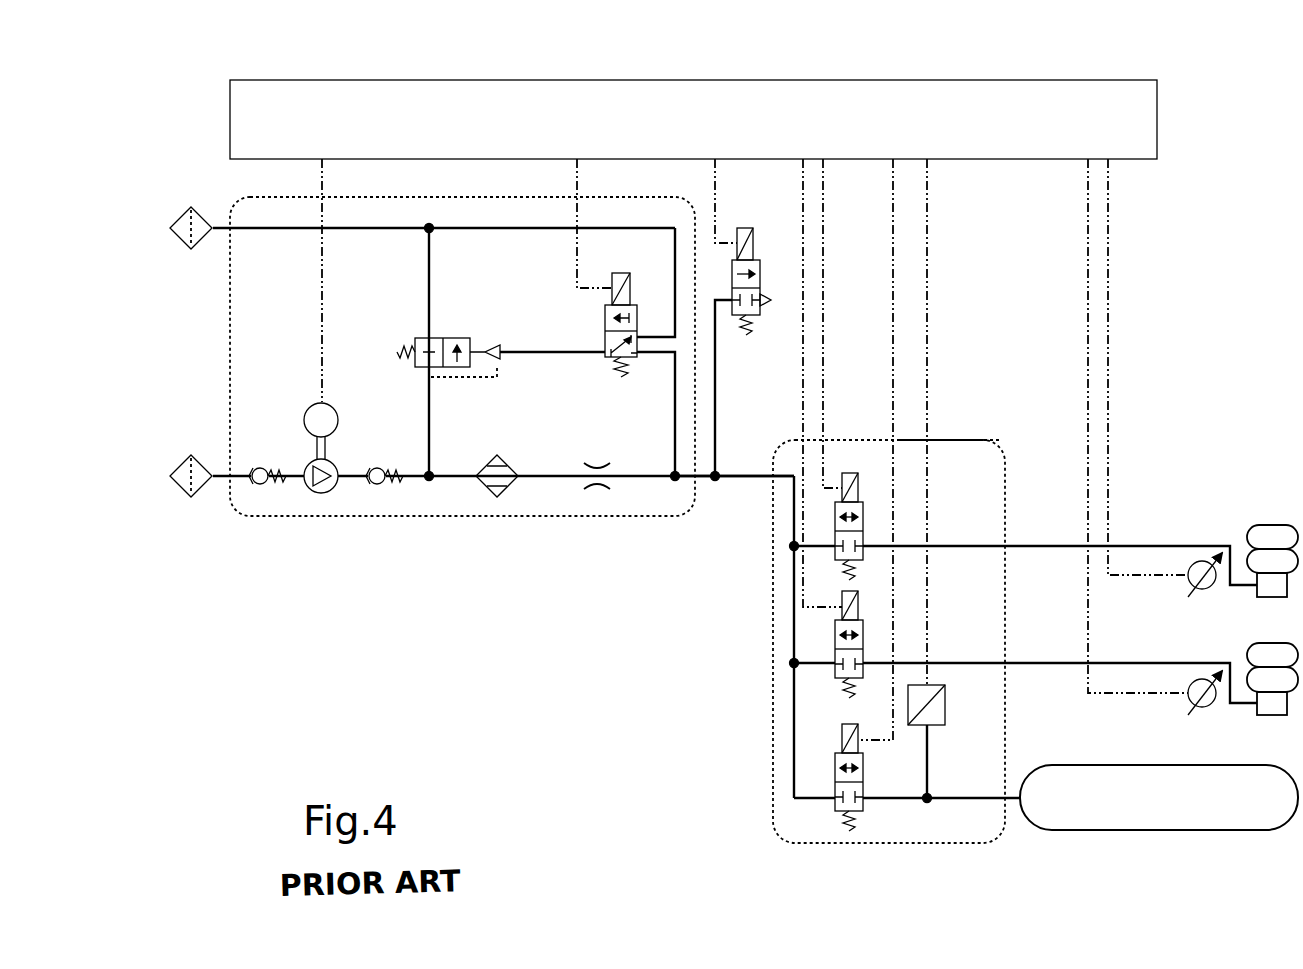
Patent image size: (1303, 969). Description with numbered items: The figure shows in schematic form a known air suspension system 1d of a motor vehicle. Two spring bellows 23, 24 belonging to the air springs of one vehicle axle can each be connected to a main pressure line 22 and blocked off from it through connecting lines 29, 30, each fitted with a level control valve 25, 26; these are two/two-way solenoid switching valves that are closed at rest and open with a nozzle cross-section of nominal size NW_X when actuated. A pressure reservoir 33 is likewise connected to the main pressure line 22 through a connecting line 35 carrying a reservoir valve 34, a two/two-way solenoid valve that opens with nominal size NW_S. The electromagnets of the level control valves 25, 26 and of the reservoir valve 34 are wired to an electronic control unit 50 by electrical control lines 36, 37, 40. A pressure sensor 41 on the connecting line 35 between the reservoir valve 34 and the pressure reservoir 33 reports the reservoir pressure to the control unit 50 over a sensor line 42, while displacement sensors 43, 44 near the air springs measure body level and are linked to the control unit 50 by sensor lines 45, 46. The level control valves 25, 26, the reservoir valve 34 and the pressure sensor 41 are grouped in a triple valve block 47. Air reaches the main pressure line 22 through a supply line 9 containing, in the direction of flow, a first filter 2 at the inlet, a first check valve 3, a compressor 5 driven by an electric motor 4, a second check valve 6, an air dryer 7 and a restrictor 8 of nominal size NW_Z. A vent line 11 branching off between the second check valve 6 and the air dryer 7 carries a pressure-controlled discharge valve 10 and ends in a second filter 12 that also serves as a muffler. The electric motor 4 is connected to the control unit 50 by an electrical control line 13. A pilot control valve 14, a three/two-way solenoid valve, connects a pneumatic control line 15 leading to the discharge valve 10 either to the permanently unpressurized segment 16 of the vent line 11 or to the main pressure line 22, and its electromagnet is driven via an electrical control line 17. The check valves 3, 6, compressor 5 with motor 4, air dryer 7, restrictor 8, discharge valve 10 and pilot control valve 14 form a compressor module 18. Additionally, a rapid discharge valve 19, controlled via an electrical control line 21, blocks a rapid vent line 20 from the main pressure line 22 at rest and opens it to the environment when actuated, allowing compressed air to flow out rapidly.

The air suspension system 1d is at (296, 692).
The first filter 2 is at (205, 490).
The first check valve 3 is at (270, 495).
The electric motor 4 is at (303, 420).
The compressor 5 is at (323, 496).
The second check valve 6 is at (385, 495).
The air dryer 7 is at (512, 490).
The restrictor 8 is at (597, 495).
The supply line 9 is at (465, 480).
The discharge valve 10 is at (410, 325).
The vent line 11 is at (429, 418).
The second filter 12 is at (196, 250).
The electrical control line 13 is at (320, 177).
The pilot control valve 14 is at (593, 325).
The pneumatic control line 15 is at (552, 354).
The permanently unpressurized segment 16 is at (277, 230).
The electrical control line 17 is at (576, 178).
The compressor module 18 is at (430, 520).
The rapid discharge valve 19 is at (747, 345).
The rapid vent line 20 is at (727, 448).
The electrical control line 21 is at (714, 178).
The main pressure line 22 is at (700, 480).
The spring bellows 23 is at (1272, 540).
The spring bellows 24 is at (1272, 655).
The level control valve 25 is at (848, 458).
The level control valve 26 is at (813, 651).
The connecting line 29 is at (1047, 476).
The connecting line 30 is at (1043, 660).
The pressure reservoir 33 is at (1143, 816).
The reservoir valve 34 is at (813, 783).
The connecting line 35 is at (963, 798).
The electrical control line 36 is at (823, 197).
The electrical control line 37 is at (803, 255).
The electrical control line 40 is at (893, 268).
The pressure sensor 41 is at (945, 703).
The sensor line 42 is at (927, 222).
The displacement sensor 43 is at (1195, 565).
The displacement sensor 44 is at (1195, 680).
The sensor line 45 is at (1108, 197).
The sensor line 46 is at (1088, 247).
The triple valve block 47 is at (963, 440).
The electronic control unit 50 is at (673, 134).